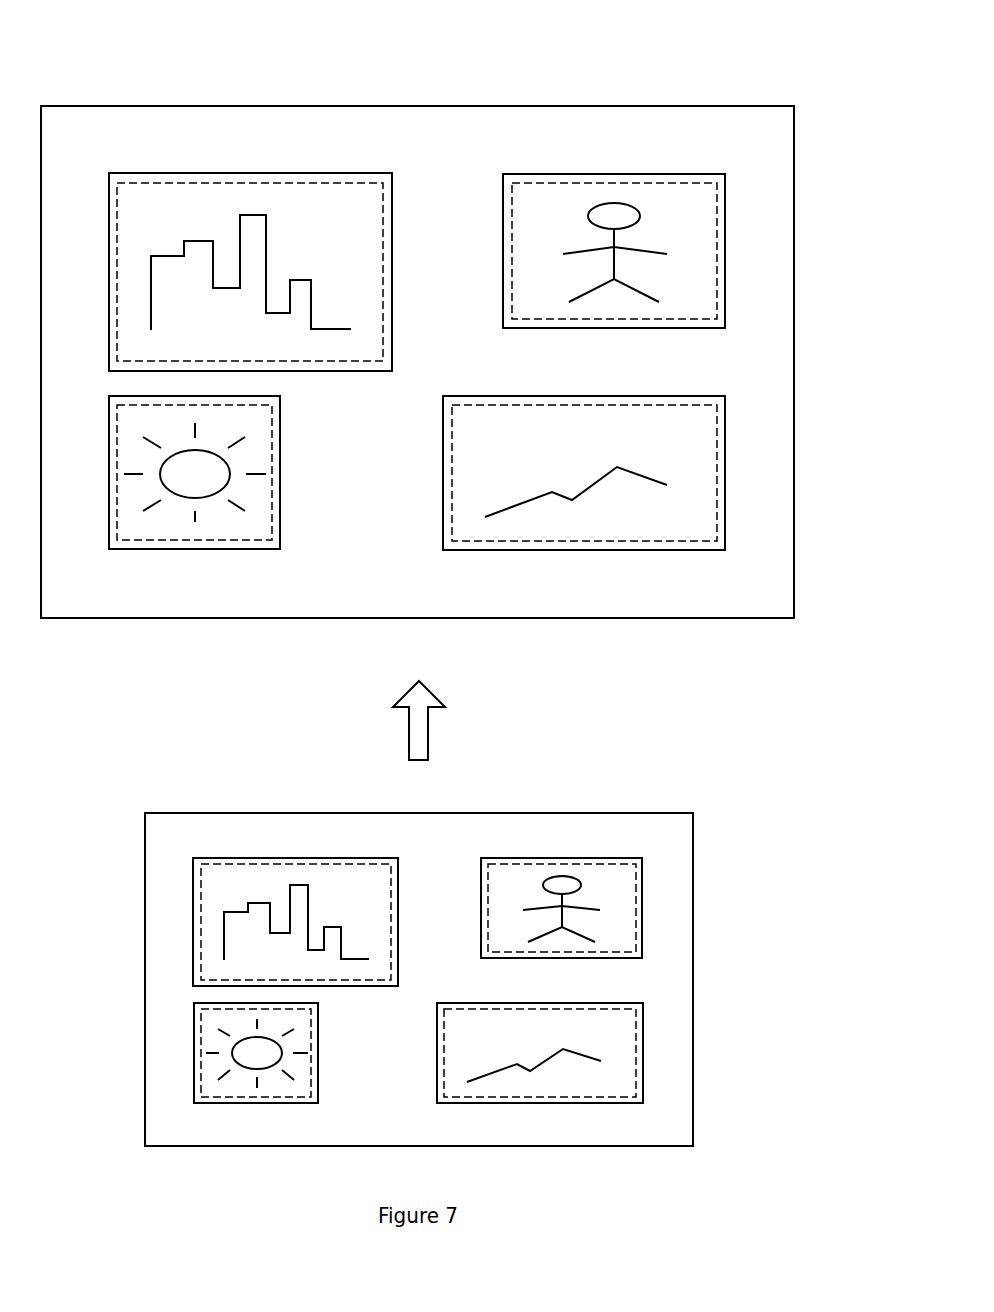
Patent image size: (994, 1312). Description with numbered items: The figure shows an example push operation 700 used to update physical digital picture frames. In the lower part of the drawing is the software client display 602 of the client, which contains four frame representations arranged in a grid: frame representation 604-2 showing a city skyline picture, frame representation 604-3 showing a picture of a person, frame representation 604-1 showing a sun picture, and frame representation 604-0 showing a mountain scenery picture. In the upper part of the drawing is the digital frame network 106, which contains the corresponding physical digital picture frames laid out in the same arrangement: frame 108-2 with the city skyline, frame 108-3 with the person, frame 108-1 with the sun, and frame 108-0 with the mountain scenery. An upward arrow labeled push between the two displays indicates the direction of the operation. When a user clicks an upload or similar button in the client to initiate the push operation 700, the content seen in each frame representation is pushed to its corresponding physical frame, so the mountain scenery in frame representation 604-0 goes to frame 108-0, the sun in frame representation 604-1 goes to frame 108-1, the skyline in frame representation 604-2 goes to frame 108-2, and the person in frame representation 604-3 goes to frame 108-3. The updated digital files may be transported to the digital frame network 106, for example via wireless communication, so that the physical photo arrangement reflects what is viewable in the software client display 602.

The push operation 700 is at (745, 30).
The digital frame network 106 is at (217, 106).
The frame 108-0 is at (628, 396).
The frame 108-1 is at (280, 472).
The frame 108-2 is at (325, 173).
The frame 108-3 is at (645, 174).
The software client display 602 is at (195, 813).
The frame representation 604-0 is at (508, 1103).
The frame representation 604-1 is at (318, 1087).
The frame representation 604-2 is at (423, 855).
The frame representation 604-3 is at (481, 942).